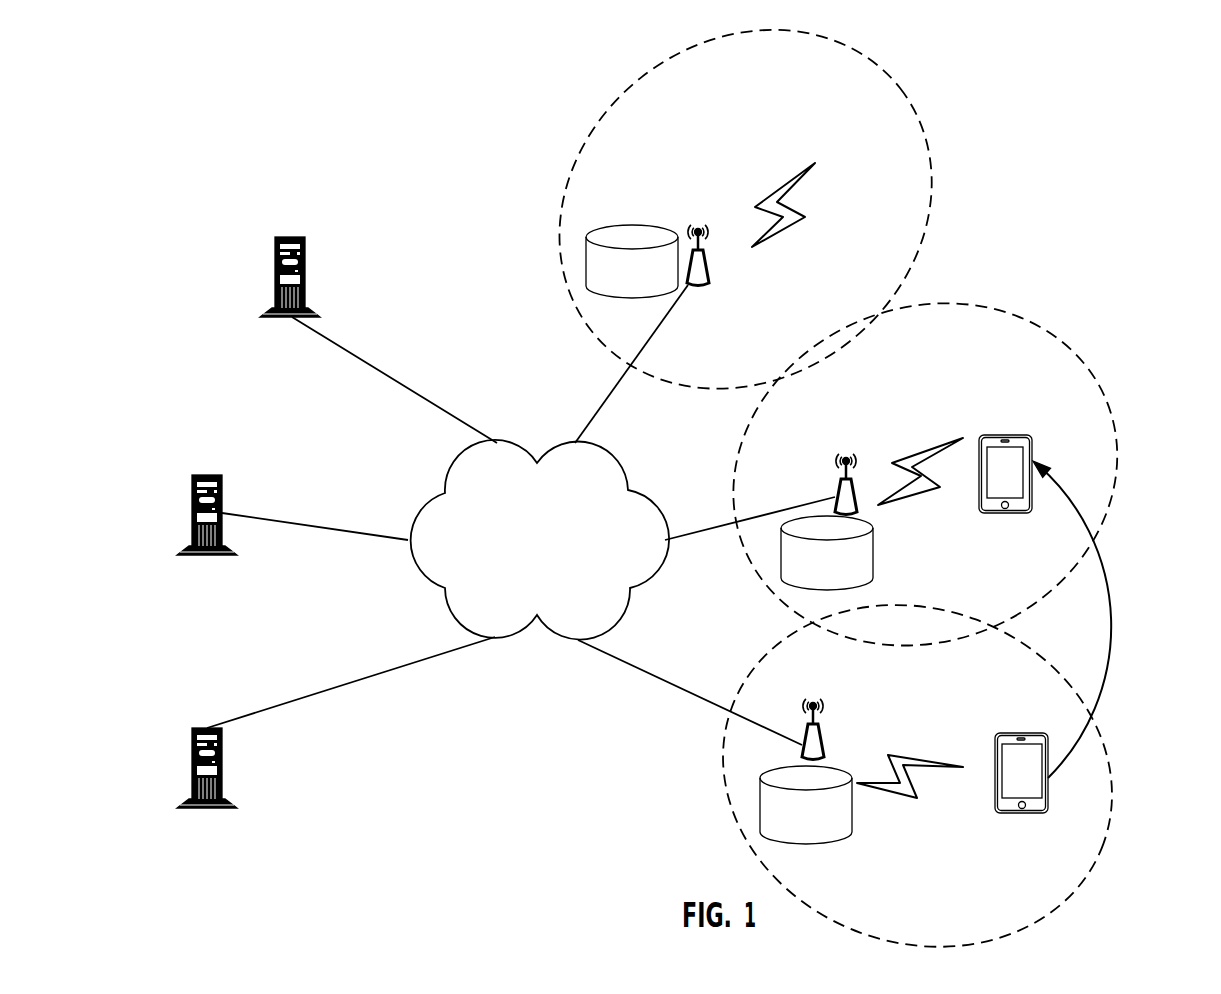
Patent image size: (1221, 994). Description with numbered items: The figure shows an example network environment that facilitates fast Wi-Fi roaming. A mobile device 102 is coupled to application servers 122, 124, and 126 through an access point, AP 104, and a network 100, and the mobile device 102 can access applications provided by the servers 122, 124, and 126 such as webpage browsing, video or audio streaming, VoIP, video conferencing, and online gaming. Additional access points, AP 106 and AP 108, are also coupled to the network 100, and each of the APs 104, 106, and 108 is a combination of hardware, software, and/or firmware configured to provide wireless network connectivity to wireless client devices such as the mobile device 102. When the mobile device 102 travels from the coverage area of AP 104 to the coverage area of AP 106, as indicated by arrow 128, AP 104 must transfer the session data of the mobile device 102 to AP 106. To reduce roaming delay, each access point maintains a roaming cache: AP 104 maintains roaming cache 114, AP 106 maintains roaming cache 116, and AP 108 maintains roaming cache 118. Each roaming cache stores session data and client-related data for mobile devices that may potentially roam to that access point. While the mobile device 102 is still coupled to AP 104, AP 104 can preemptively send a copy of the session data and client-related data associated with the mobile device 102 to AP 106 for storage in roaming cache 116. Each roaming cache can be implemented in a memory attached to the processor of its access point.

The network 100 is at (523, 561).
The mobile device 102 is at (1012, 435).
The AP 104 is at (825, 745).
The AP 106 is at (857, 500).
The AP 108 is at (708, 271).
The roaming cache 114 is at (760, 817).
The roaming cache 116 is at (781, 557).
The roaming cache 118 is at (586, 268).
The application server 122 is at (305, 273).
The application server 124 is at (222, 475).
The application server 126 is at (222, 767).
The arrow 128 is at (1108, 643).